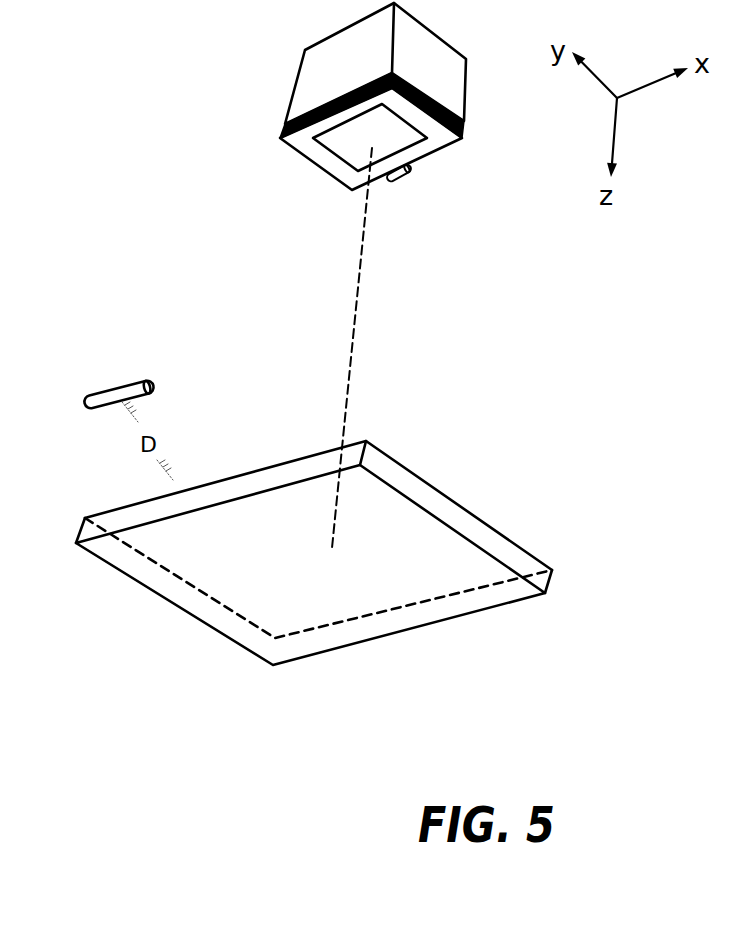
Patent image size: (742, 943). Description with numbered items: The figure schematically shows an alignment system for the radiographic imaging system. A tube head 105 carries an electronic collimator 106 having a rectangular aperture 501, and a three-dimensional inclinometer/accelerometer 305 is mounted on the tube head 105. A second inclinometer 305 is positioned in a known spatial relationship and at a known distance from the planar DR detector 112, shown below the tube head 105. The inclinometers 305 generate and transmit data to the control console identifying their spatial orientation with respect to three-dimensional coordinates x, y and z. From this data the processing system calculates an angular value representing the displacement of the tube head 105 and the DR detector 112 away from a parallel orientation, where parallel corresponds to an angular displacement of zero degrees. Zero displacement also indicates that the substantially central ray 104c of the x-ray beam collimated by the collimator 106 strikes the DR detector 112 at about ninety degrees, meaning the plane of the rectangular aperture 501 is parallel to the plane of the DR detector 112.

The tube head 105 is at (274, 68).
The electronic collimator 106 is at (271, 132).
The rectangular aperture 501 is at (337, 170).
The three-dimensional inclinometer/accelerometer 305 is at (402, 190).
The central ray 104c is at (369, 314).
The DR detector 112 is at (462, 490).